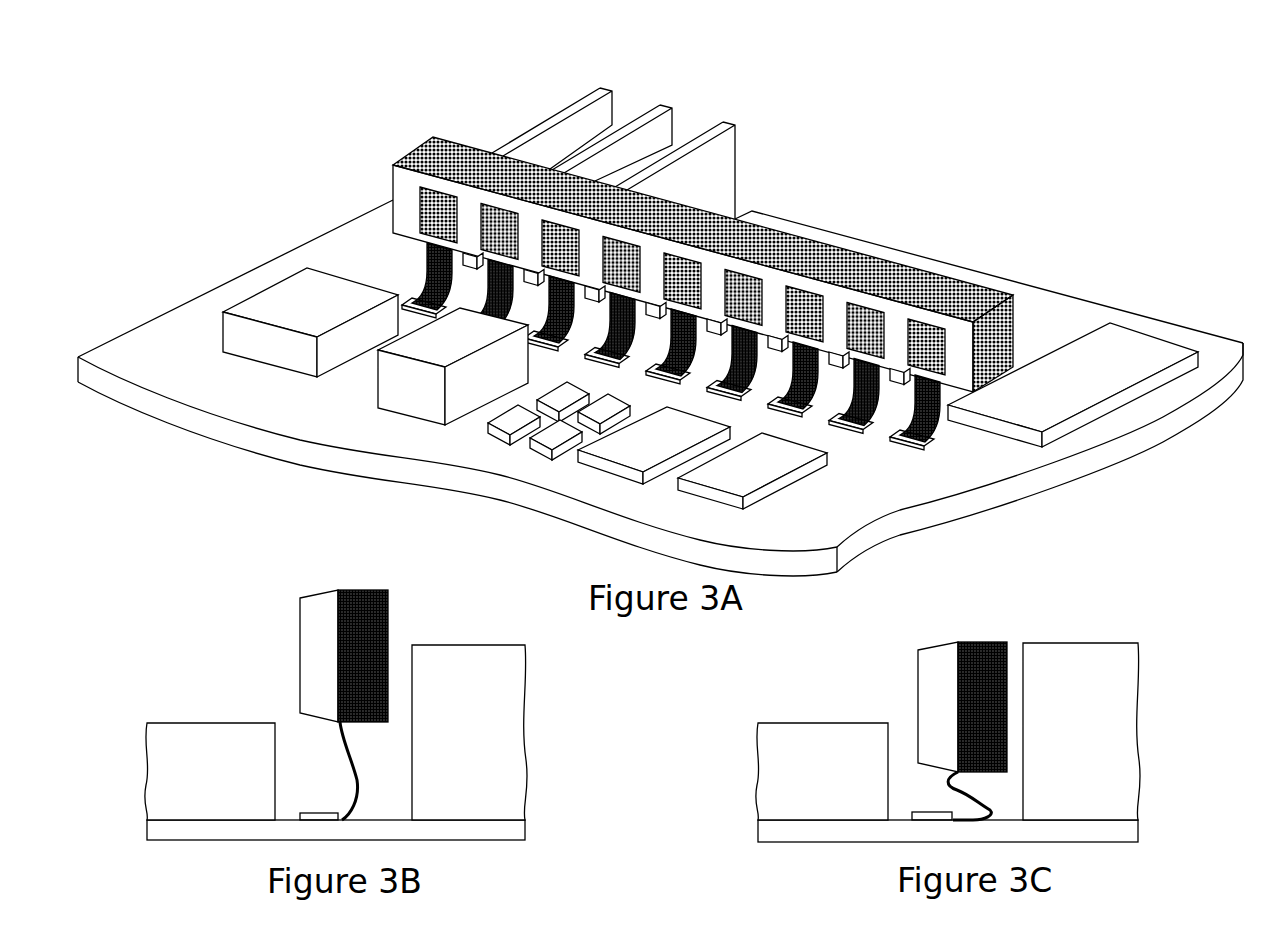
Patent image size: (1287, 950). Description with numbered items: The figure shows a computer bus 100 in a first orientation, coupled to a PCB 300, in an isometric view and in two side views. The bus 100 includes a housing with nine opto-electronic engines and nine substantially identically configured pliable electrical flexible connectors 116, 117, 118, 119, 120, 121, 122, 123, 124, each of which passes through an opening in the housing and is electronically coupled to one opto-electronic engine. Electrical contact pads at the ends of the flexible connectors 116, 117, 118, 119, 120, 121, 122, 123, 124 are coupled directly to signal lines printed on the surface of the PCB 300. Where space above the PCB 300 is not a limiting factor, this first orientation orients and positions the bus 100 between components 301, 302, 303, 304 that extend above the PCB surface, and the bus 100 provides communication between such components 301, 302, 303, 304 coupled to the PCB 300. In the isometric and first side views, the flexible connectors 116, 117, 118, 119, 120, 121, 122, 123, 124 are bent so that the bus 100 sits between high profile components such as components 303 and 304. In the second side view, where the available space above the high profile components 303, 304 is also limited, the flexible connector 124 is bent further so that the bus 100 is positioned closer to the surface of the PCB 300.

In FIG. 3A, the bus 100 is at (898, 250).
In FIG. 3B, the bus 100 is at (292, 588).
In FIG. 3C, the bus 100 is at (897, 652).
In FIG. 3A, the flexible connector 116 is at (425, 262).
In FIG. 3A, the flexible connector 117 is at (500, 289).
In FIG. 3A, the flexible connector 118 is at (558, 308).
In FIG. 3A, the flexible connector 119 is at (622, 326).
In FIG. 3A, the flexible connector 120 is at (680, 344).
In FIG. 3A, the flexible connector 121 is at (742, 359).
In FIG. 3A, the flexible connector 122 is at (797, 388).
In FIG. 3A, the flexible connector 123 is at (862, 406).
In FIG. 3A, the flexible connector 124 is at (923, 416).
In FIG. 3B, the flexible connector 124 is at (353, 785).
In FIG. 3C, the flexible connector 124 is at (953, 790).
In FIG. 3A, the PCB 300 is at (1077, 317).
In FIG. 3B, the PCB 300 is at (523, 832).
In FIG. 3C, the PCB 300 is at (1127, 832).
In FIG. 3A, the component 301 is at (602, 90).
In FIG. 3A, the component 302 is at (663, 107).
In FIG. 3A, the component 303 is at (730, 124).
In FIG. 3B, the component 303 is at (497, 737).
In FIG. 3C, the component 303 is at (1100, 737).
In FIG. 3A, the component 304 is at (410, 392).
In FIG. 3B, the component 304 is at (239, 789).
In FIG. 3C, the component 304 is at (844, 791).